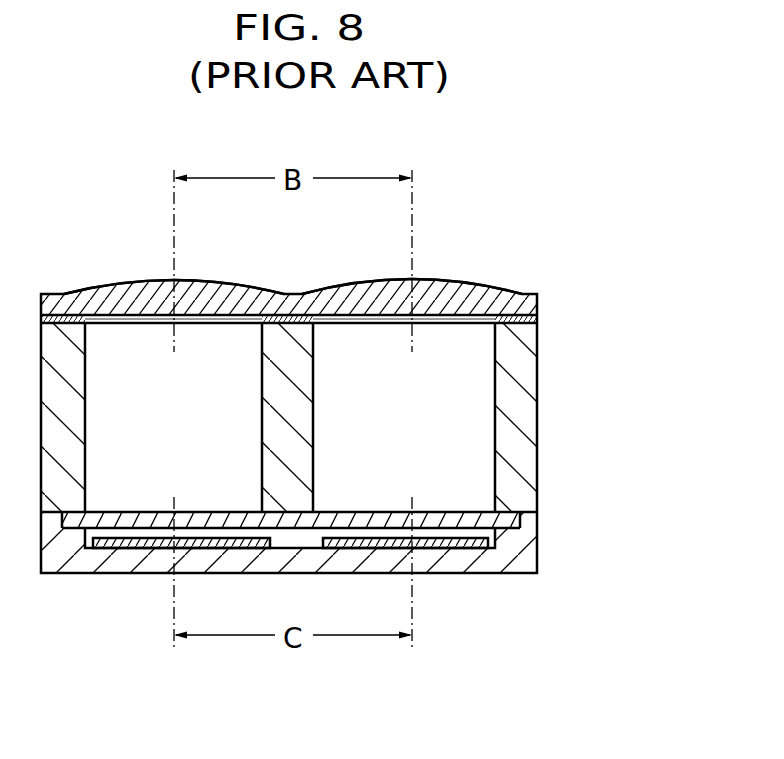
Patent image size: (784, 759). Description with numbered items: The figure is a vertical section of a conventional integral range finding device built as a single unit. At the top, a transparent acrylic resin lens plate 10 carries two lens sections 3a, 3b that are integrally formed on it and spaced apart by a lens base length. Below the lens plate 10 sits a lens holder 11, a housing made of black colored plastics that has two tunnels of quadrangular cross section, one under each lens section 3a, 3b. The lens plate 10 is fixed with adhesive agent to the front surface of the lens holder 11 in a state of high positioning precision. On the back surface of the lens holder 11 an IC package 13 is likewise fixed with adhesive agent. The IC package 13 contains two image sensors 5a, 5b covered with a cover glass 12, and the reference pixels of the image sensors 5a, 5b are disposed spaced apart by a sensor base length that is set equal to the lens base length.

The lens section 3a is at (440, 283).
The lens section 3b is at (145, 283).
The image sensor 5a is at (462, 548).
The image sensor 5b is at (118, 548).
The lens plate 10 is at (537, 303).
The lens holder 11 is at (533, 388).
The cover glass 12 is at (213, 512).
The IC package 13 is at (577, 536).